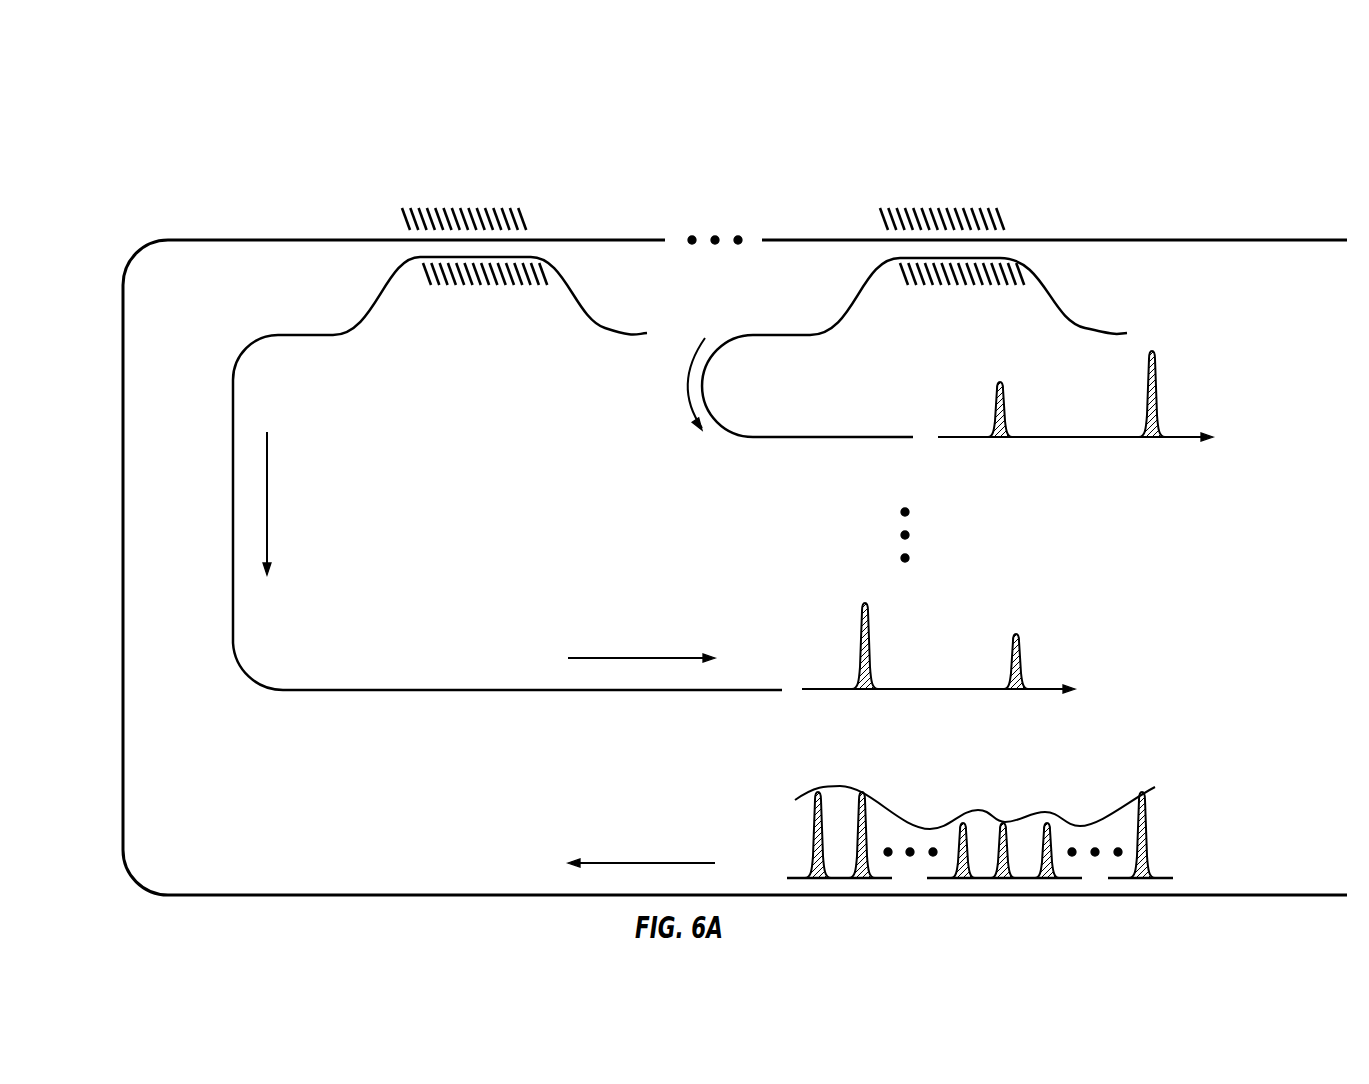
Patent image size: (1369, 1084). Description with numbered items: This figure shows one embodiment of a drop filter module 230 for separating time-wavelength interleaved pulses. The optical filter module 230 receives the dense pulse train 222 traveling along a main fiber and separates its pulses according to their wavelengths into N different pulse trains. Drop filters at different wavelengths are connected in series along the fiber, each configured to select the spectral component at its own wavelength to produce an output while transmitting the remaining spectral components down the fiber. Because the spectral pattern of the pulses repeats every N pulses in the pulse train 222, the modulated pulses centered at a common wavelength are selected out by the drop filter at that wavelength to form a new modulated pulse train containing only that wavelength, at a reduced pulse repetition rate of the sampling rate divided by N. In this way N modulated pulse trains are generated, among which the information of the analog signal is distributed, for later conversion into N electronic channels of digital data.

The optical filter module 230 is at (1250, 168).
The pulse train 222 is at (1165, 878).